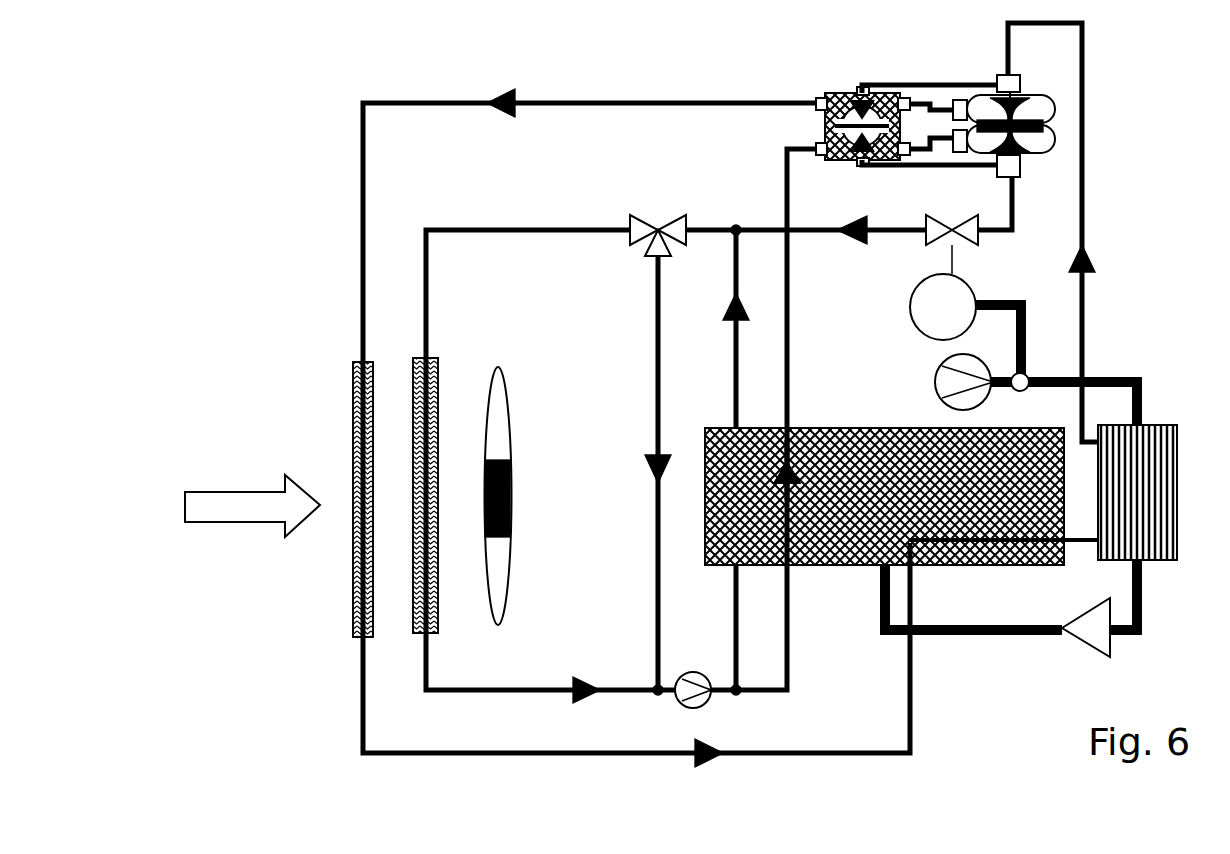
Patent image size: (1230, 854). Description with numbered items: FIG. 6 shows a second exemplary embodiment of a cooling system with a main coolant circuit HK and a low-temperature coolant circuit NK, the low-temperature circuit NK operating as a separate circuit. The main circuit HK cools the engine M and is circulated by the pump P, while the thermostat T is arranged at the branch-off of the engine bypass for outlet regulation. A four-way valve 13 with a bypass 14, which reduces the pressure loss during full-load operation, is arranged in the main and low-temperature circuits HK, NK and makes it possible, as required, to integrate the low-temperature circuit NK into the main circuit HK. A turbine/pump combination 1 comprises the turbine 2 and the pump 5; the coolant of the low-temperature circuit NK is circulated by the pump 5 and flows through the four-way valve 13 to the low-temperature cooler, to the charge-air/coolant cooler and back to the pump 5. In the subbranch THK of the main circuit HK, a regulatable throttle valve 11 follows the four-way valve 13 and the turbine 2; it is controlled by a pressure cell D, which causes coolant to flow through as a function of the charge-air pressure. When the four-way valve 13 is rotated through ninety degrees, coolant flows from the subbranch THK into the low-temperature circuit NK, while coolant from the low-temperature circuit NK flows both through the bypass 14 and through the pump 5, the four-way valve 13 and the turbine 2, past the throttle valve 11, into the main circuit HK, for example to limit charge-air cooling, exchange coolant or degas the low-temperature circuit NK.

The turbine/pump combination 1 is at (1048, 105).
The turbine 2 is at (1043, 143).
The pump 5 is at (980, 103).
The throttle valve 11 is at (967, 230).
The 4-way valve 13 is at (858, 100).
The bypass 14 is at (888, 90).
The thermostat T is at (653, 205).
The pressure cell D is at (953, 290).
The low-temperature circuit NK is at (1082, 318).
The engine M is at (918, 548).
The subbranch THK is at (787, 690).
The pump P is at (688, 695).
The main circuit HK is at (723, 690).